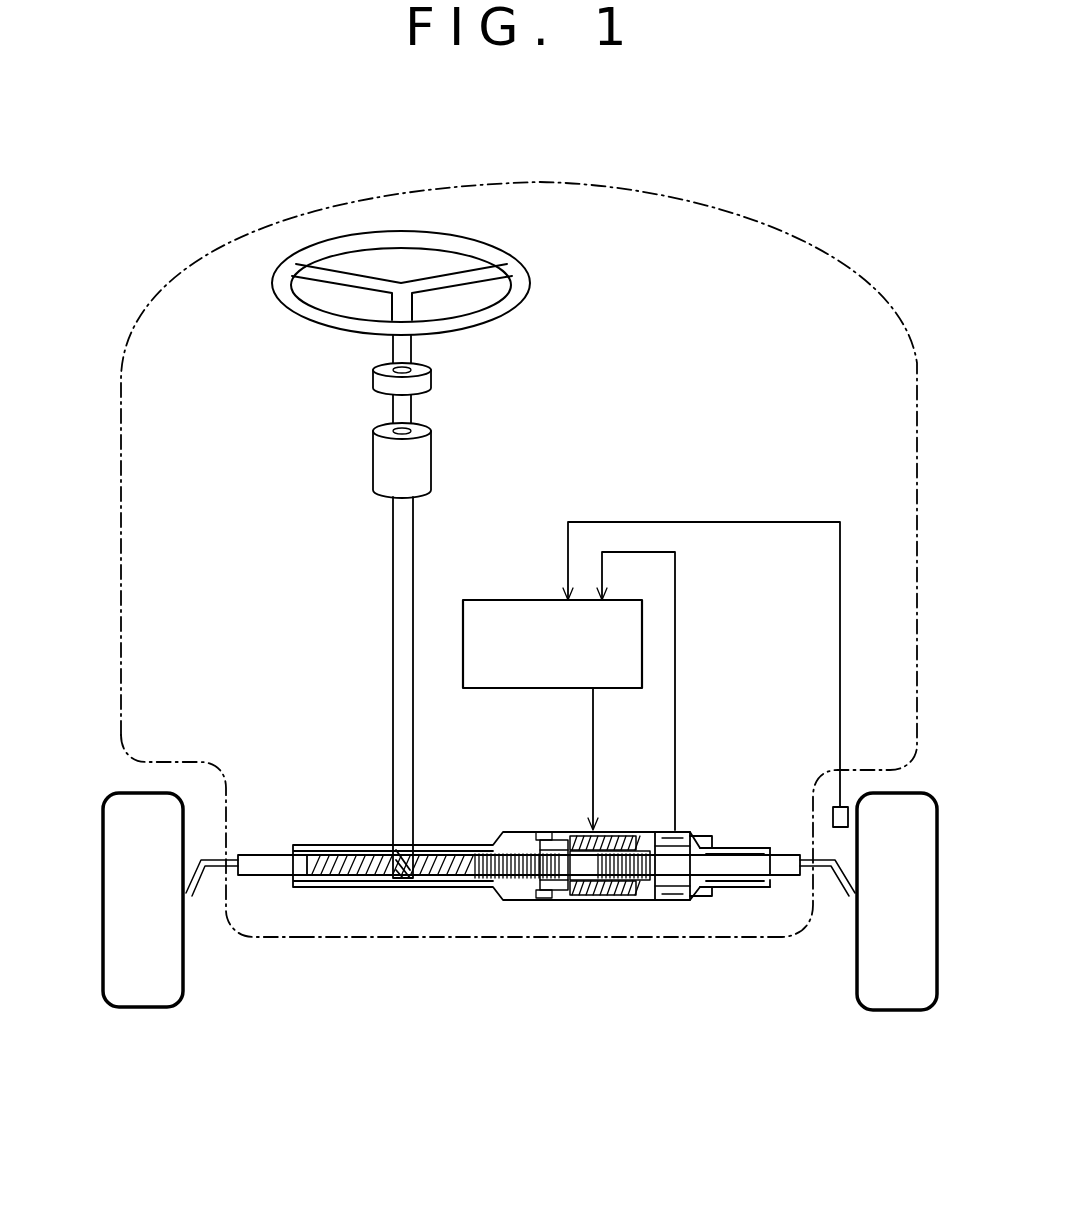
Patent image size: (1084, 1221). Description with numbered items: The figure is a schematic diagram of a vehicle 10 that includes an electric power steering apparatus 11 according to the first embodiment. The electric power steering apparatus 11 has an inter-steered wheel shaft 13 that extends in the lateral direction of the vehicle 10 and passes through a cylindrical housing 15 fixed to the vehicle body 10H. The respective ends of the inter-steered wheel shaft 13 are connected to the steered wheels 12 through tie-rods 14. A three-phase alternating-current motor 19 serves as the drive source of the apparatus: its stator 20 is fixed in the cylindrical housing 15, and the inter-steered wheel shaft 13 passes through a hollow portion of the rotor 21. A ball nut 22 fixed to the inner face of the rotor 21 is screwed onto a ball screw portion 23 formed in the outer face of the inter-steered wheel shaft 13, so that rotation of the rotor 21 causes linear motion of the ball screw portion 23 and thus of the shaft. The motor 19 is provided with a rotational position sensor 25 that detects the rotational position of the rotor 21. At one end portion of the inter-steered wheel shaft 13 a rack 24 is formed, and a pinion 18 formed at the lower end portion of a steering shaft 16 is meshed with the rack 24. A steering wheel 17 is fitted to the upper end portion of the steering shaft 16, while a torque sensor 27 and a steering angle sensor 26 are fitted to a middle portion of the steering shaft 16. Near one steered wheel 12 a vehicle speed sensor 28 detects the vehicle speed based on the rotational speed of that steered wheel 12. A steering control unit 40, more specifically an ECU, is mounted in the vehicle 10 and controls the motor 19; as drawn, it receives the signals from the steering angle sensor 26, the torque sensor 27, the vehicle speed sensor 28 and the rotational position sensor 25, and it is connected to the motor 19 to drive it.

The vehicle 10 is at (771, 218).
The vehicle body 10H is at (290, 937).
The electric power steering apparatus 11 is at (318, 828).
The steered wheels 12 is at (140, 988).
The inter-steered wheel shaft 13 is at (458, 895).
The tie-rods 14 is at (215, 870).
The cylindrical housing 15 is at (760, 892).
The steering shaft 16 is at (413, 765).
The steering wheel 17 is at (530, 272).
The pinion 18 is at (402, 877).
The three-phase alternating-current motor 19 is at (617, 947).
The stator 20 is at (608, 900).
The rotor 21 is at (633, 900).
The ball nut 22 is at (558, 898).
The ball screw portion 23 is at (503, 896).
The rack 24 is at (355, 877).
The rotational position sensor 25 is at (670, 900).
The steering angle sensor 26 is at (373, 379).
The torque sensor 27 is at (383, 466).
The vehicle speed sensor 28 is at (833, 812).
The steering control unit 40 is at (462, 634).